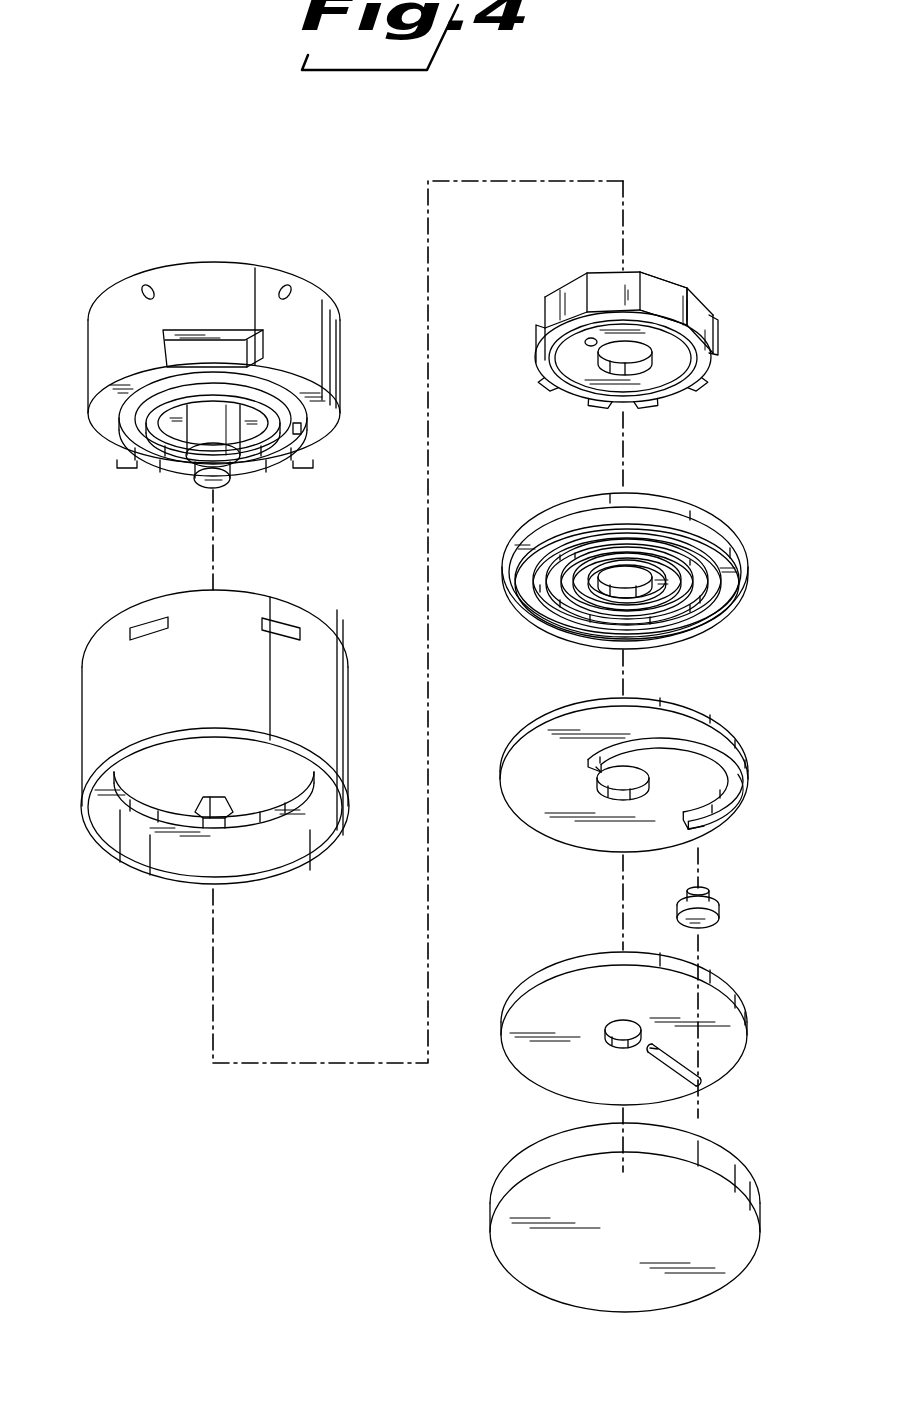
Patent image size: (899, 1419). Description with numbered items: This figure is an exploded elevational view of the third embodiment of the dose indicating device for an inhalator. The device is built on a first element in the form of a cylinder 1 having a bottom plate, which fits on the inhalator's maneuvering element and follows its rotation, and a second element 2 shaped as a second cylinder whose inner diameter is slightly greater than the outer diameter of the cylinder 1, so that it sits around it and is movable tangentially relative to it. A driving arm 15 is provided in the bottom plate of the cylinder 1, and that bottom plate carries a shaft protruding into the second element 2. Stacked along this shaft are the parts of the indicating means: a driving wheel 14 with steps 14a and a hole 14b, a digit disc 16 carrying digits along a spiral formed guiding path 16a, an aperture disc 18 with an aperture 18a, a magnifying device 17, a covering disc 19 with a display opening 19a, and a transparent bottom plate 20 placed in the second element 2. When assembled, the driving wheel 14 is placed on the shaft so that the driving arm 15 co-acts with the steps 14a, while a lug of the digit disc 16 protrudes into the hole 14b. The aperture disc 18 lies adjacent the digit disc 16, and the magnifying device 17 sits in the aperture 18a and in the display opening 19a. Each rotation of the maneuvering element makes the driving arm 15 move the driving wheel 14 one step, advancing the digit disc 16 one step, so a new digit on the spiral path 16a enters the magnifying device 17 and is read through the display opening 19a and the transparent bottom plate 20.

The cylinder 1 is at (120, 272).
The second element 2 is at (100, 612).
The driving wheel 14 is at (626, 314).
The steps 14a is at (688, 287).
The hole 14b is at (590, 343).
The driving arm 15 is at (300, 428).
The digit disc 16 is at (653, 559).
The spiral formed guiding path 16a is at (705, 590).
The magnifying device 17 is at (721, 916).
The aperture disc 18 is at (654, 766).
The aperture 18a is at (707, 810).
The covering disc 19 is at (654, 1032).
The display opening 19a is at (700, 1082).
The transparent bottom plate 20 is at (745, 1162).